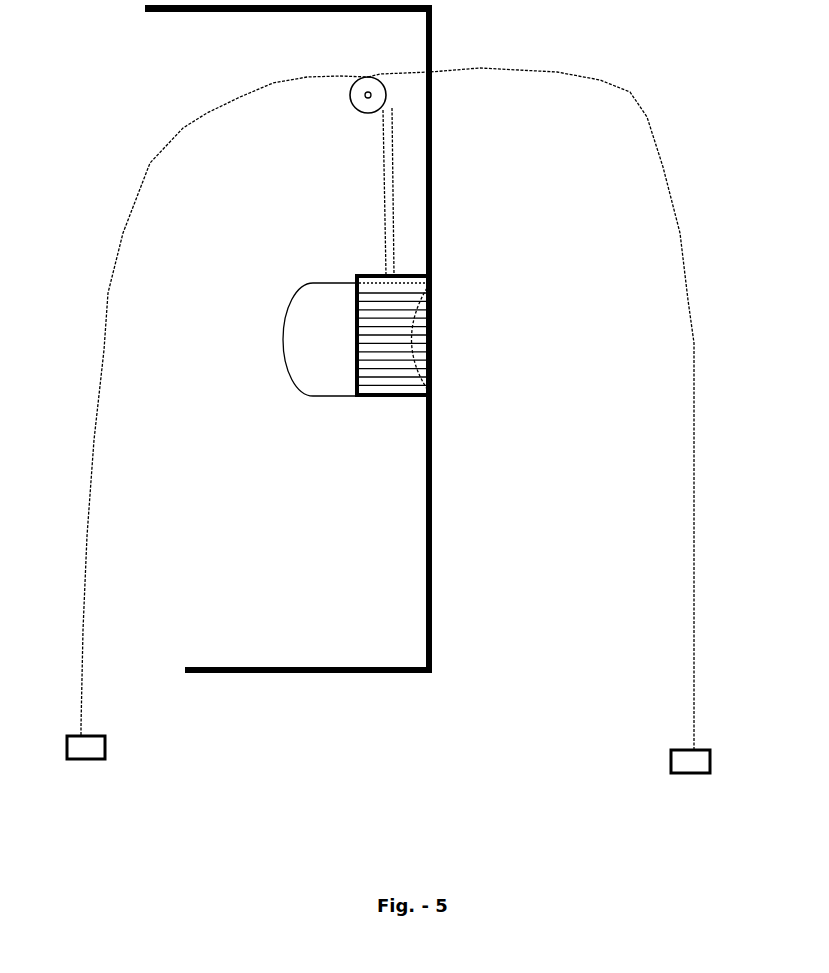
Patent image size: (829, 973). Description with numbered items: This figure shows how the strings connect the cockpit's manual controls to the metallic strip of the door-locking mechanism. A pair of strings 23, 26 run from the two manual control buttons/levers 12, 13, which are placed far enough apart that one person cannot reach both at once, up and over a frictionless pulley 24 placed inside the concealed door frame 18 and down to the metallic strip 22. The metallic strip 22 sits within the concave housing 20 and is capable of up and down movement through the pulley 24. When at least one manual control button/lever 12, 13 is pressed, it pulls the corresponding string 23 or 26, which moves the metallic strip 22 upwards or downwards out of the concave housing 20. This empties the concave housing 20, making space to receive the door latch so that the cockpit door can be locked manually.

The manual control button/lever 12 is at (81, 768).
The manual control button/lever 13 is at (682, 783).
The concealed door frame 18 is at (288, 338).
The concave housing 20 is at (284, 313).
The metallic strip 22 is at (323, 365).
The string 23 is at (380, 187).
The frictionless pulley 24 is at (382, 86).
The string 26 is at (633, 110).